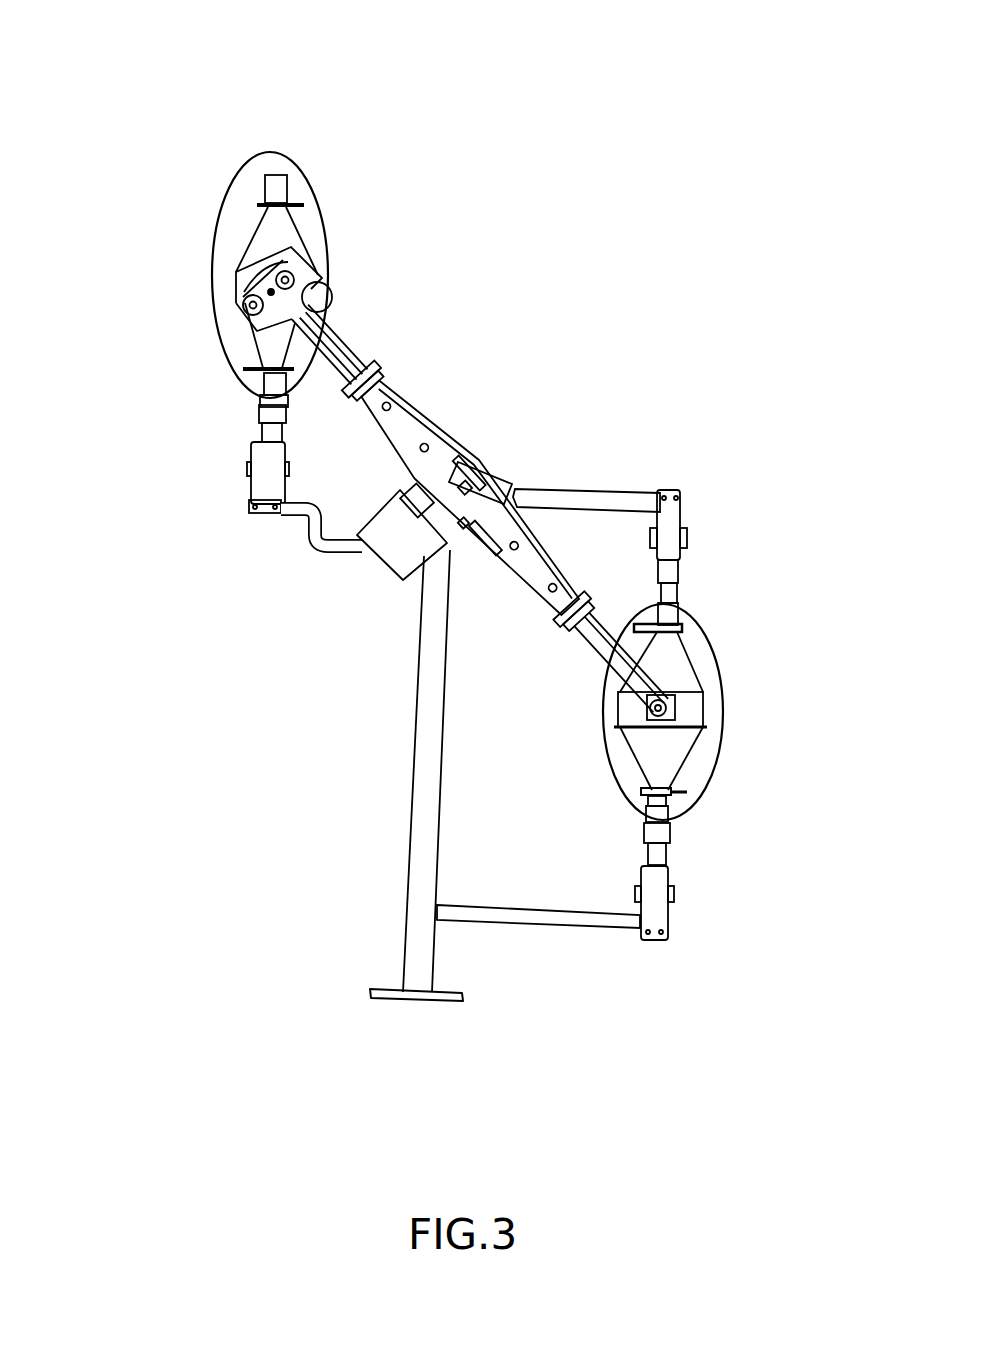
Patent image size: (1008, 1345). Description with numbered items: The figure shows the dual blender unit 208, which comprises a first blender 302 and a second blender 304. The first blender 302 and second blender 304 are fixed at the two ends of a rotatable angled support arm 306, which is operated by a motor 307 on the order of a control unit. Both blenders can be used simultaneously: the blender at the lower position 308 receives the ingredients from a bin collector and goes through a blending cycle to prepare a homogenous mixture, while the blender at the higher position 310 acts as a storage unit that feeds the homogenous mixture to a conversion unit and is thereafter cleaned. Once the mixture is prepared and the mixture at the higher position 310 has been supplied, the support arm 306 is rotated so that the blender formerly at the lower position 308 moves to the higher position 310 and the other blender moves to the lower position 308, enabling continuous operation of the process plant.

The dual blender unit 208 is at (752, 232).
The first blender 302 is at (600, 688).
The second blender 304 is at (288, 152).
The rotatable angled support arm 306 is at (432, 418).
The motor 307 is at (373, 570).
The lower position 308 is at (685, 762).
The higher position 310 is at (243, 342).